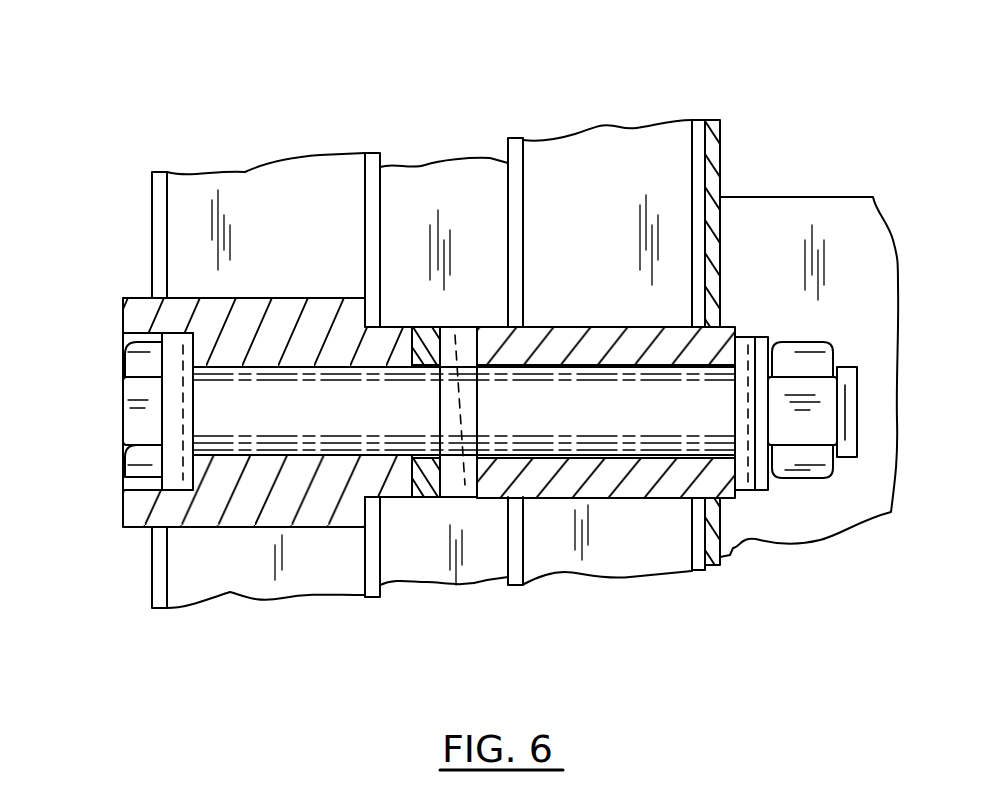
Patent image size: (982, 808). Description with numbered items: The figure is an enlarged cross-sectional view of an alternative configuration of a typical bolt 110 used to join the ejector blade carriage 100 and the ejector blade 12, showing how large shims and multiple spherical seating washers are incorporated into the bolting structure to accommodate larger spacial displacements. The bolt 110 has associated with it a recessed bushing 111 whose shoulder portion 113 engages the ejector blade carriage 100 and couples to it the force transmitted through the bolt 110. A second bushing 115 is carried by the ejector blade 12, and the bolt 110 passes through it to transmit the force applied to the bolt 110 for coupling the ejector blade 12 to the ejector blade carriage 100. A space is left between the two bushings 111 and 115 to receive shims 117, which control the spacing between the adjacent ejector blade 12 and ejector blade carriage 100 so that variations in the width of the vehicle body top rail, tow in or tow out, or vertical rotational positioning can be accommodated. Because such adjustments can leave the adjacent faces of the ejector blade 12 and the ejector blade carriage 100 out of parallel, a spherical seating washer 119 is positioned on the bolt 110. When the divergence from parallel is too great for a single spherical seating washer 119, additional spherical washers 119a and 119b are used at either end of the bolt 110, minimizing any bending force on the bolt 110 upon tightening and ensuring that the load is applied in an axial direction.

The ejector blade carriage 100 is at (303, 116).
The recessed bushing 111 is at (322, 305).
The shoulder portion 113 is at (367, 322).
The second bushing 115 is at (562, 338).
The ejector blade 12 is at (720, 170).
The bolt 110 is at (317, 422).
The shims 117 is at (422, 498).
The spherical seating washer 119 is at (455, 472).
The additional spherical washer 119a is at (188, 493).
The additional spherical washer 119b is at (750, 490).